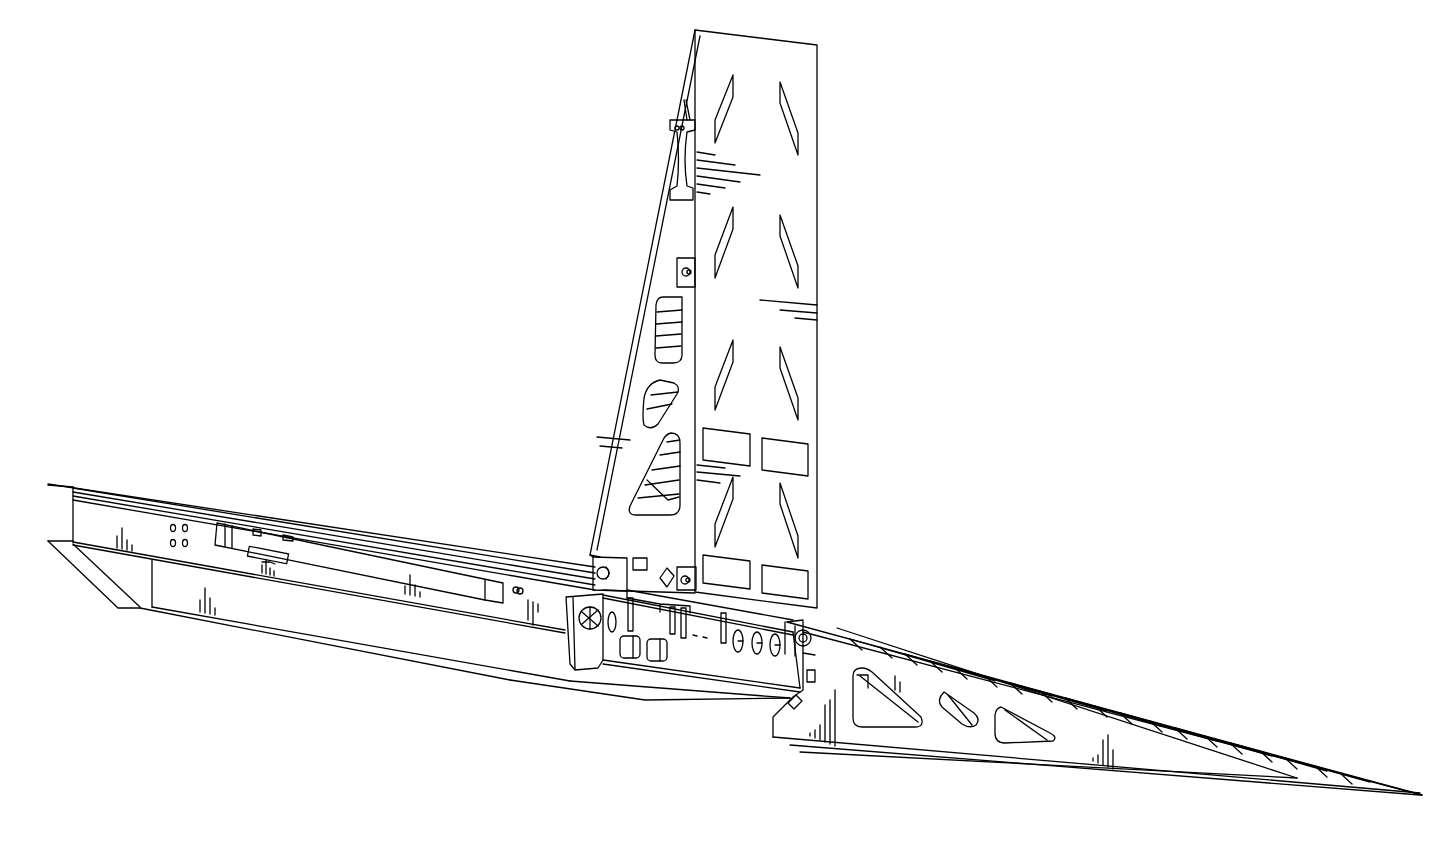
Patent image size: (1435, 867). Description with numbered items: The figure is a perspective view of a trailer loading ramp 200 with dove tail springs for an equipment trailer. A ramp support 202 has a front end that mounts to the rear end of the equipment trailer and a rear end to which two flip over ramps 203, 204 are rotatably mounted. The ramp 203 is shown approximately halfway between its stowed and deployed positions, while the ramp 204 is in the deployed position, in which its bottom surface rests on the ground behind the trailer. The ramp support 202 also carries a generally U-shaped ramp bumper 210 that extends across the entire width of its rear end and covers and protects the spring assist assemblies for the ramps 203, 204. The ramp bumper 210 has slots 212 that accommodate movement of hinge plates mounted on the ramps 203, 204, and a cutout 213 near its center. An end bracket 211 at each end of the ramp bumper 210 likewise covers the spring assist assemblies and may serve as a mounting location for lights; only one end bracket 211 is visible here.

The trailer loading ramp 200 is at (1068, 269).
The ramp support 202 is at (270, 518).
The flip over ramp 203 is at (816, 197).
The flip over ramp 204 is at (1118, 697).
The ramp bumper 210 is at (640, 684).
The end bracket 211 is at (560, 620).
The slots 212 is at (632, 600).
The cutout 213 is at (805, 637).